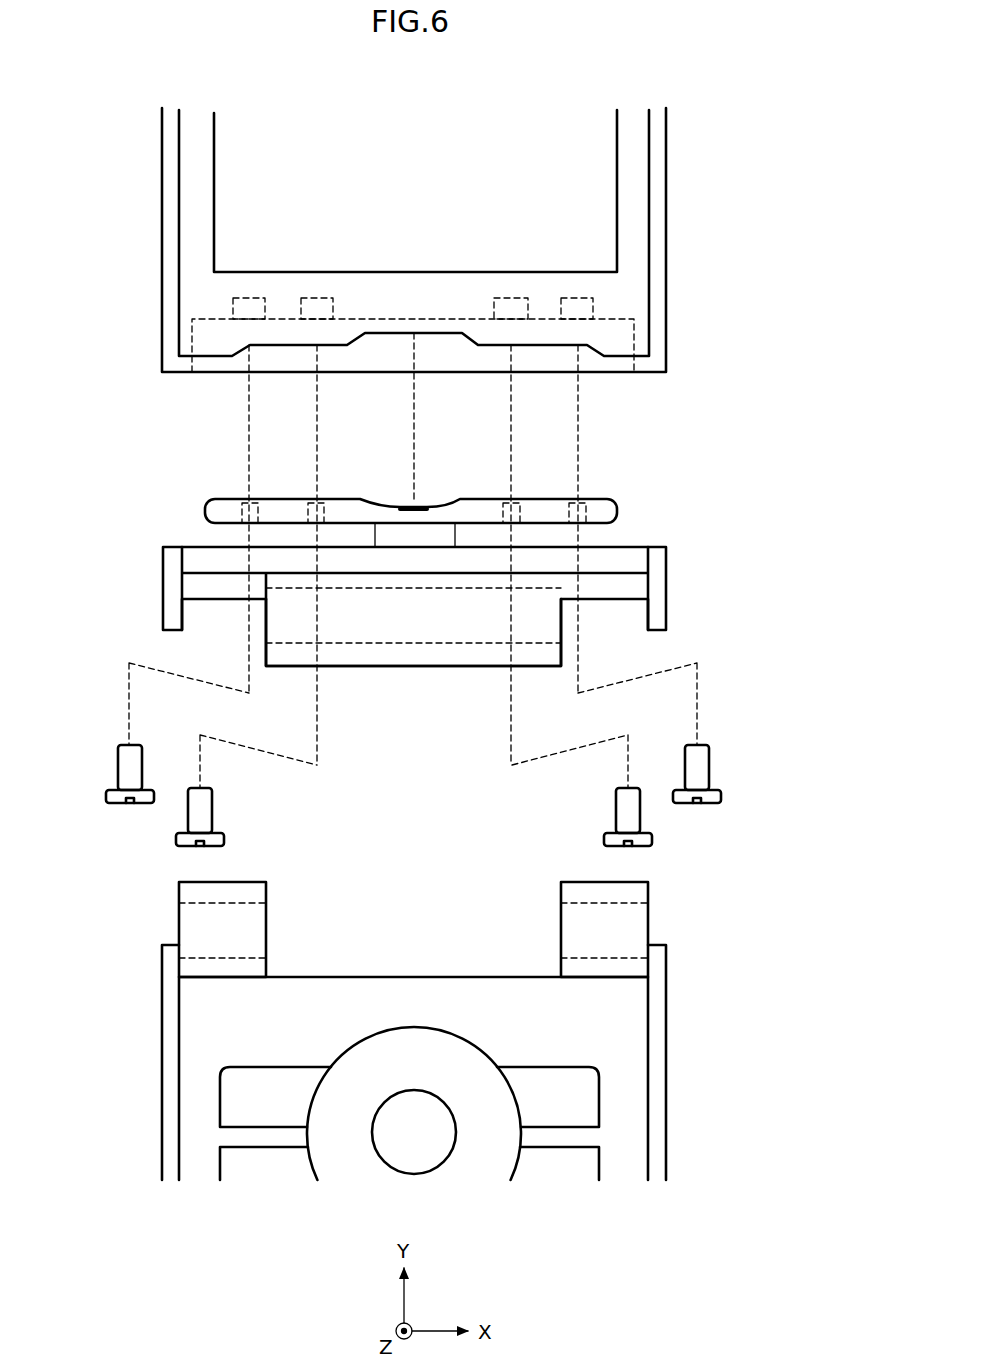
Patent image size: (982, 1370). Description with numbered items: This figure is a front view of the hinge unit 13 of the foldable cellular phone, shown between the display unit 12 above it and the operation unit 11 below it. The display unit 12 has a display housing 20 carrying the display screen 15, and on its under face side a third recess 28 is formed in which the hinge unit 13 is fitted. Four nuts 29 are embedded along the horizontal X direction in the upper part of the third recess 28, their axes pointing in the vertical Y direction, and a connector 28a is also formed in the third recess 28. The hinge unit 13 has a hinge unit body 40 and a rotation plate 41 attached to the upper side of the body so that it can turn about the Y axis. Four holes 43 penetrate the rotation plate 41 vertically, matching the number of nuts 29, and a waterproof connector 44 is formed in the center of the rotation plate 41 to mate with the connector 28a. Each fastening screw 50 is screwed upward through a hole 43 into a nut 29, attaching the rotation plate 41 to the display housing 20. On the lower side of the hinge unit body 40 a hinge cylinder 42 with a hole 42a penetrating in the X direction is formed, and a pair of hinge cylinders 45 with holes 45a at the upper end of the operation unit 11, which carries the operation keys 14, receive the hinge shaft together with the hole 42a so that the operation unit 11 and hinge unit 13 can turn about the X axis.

The operation unit 11 is at (736, 948).
The display unit 12 is at (735, 122).
The hinge unit 13 is at (748, 461).
The operation keys 14 is at (257, 1094).
The display screen 15 is at (252, 169).
The display housing 20 is at (670, 195).
The third recess 28 is at (640, 328).
The connector 28a is at (418, 338).
The nuts 29 is at (250, 310).
The hinge unit body 40 is at (163, 558).
The rotation plate 41 is at (205, 507).
The hinge cylinder 42 is at (400, 667).
The hole 42a is at (440, 638).
The holes 43 is at (246, 502).
The waterproof connector 44 is at (425, 504).
The hinge cylinders 45 is at (179, 912).
The hole 45a is at (265, 903).
The fastening screw 50 is at (128, 764).